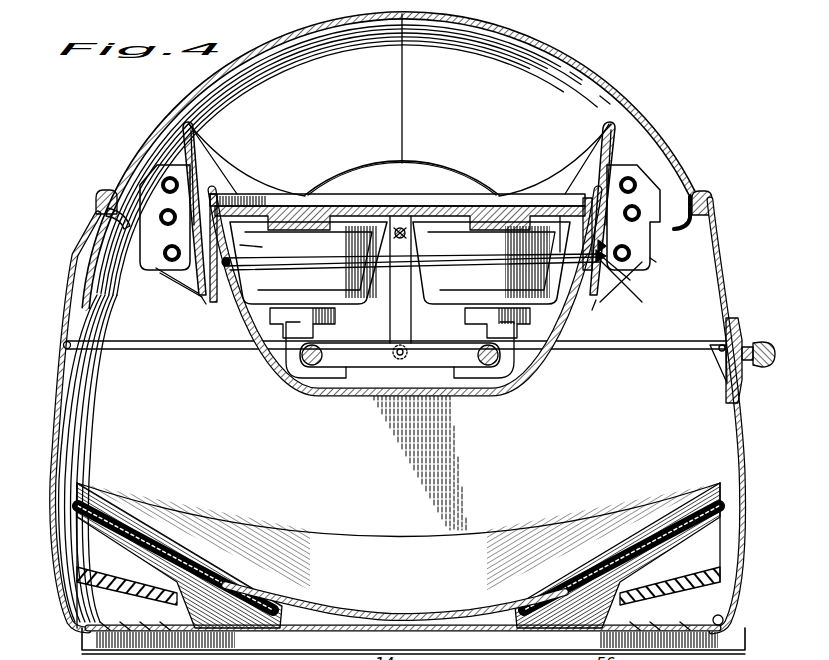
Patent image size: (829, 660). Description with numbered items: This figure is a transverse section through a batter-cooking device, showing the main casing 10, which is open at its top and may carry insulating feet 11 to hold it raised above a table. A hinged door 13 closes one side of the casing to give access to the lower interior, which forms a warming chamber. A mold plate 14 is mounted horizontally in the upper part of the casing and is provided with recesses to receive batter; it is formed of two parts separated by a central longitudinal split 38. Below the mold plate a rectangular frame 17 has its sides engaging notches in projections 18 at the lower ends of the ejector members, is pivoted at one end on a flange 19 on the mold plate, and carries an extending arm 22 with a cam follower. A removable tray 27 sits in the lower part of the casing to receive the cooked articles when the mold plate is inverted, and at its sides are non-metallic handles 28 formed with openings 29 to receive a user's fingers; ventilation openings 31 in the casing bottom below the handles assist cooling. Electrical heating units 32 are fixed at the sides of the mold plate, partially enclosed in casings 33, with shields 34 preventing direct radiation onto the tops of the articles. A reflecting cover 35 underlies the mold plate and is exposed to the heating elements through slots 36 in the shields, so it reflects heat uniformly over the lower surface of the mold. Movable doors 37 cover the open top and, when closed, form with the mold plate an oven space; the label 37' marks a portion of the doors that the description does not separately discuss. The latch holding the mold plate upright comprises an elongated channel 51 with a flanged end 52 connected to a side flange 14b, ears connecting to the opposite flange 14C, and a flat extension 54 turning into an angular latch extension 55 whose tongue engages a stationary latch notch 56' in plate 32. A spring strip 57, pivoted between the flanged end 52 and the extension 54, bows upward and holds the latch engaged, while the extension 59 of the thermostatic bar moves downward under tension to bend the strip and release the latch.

The main casing 10 is at (60, 399).
The insulating feet 11 is at (88, 638).
The hinged door 13 is at (742, 440).
The mold plate 14 is at (453, 213).
The side flange 14b is at (260, 247).
The side flange 14C is at (587, 228).
The rectangular frame 17 is at (340, 360).
The projections 18 is at (290, 360).
The flange 19 is at (407, 318).
The extending arm 22 is at (347, 322).
The removable tray 27 is at (347, 553).
The handles 28 is at (75, 500).
The openings 29 is at (88, 540).
The ventilation openings 31 is at (130, 627).
The electrical heating units 32 is at (150, 190).
The casings 33 is at (197, 300).
The shields 34 is at (188, 148).
The reflecting cover 35 is at (547, 354).
The openings or slots 36 is at (197, 278).
The movable doors 37 is at (388, 160).
The dome layer 37' is at (353, 160).
The central longitudinal split 38 is at (400, 212).
The elongated channel 51 is at (323, 268).
The flanged end 52 is at (220, 254).
The flat extension 54 is at (623, 280).
The angular latch extension 55 is at (593, 242).
The stationary latch notch 56' is at (673, 262).
The spring strip 57 is at (440, 252).
The extension 59 is at (407, 245).